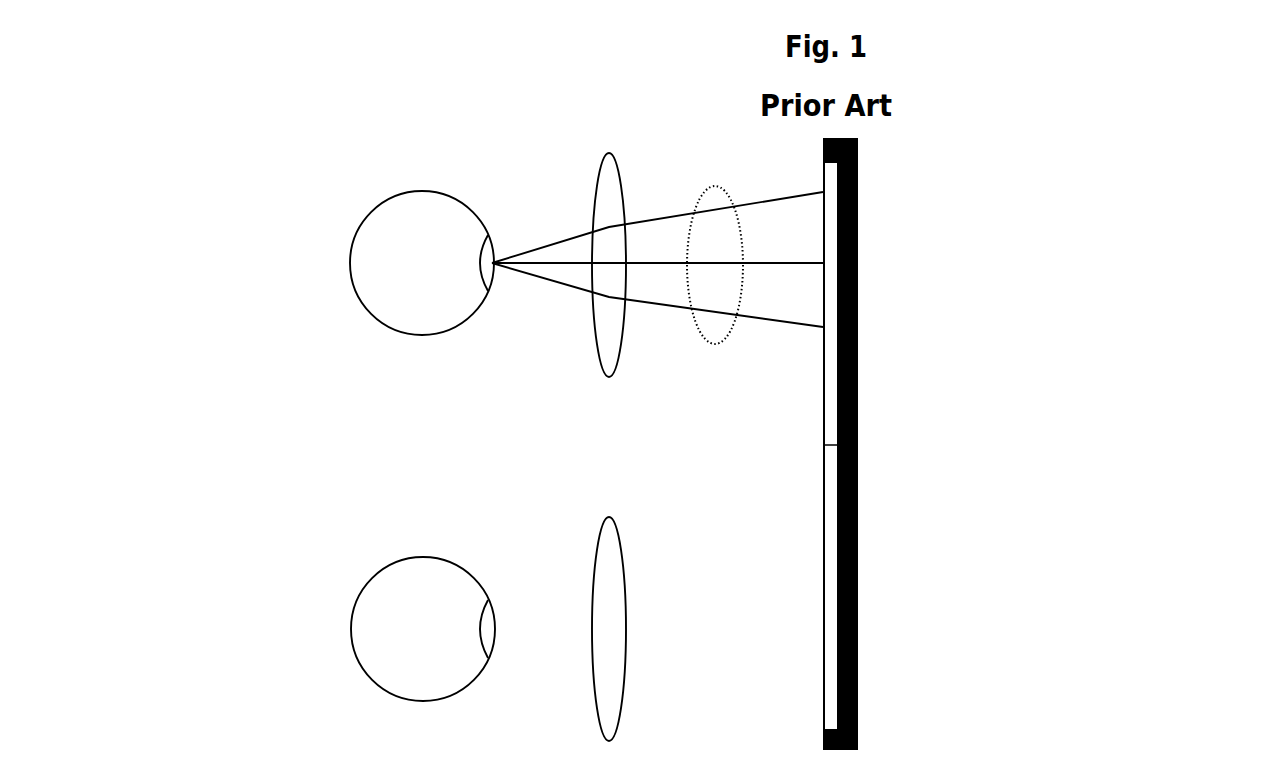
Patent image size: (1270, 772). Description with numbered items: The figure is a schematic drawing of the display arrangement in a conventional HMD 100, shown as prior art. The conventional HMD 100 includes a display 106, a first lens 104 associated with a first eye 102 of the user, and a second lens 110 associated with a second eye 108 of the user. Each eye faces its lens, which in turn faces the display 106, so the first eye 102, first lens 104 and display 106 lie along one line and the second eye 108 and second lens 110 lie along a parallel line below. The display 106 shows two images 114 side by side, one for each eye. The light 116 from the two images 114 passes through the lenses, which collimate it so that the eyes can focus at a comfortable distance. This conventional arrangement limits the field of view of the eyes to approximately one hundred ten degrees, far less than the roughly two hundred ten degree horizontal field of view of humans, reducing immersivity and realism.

The conventional HMD 100 is at (1195, 167).
The first eye 102 is at (373, 224).
The first lens 104 is at (607, 190).
The display 106 is at (858, 205).
The second eye 108 is at (362, 600).
The second lens 110 is at (605, 559).
The images 114 is at (822, 412).
The light 116 is at (700, 205).